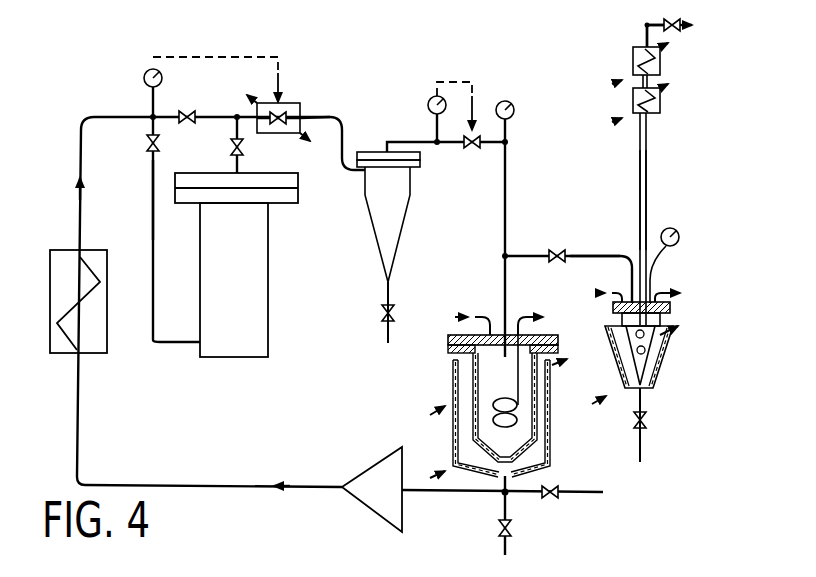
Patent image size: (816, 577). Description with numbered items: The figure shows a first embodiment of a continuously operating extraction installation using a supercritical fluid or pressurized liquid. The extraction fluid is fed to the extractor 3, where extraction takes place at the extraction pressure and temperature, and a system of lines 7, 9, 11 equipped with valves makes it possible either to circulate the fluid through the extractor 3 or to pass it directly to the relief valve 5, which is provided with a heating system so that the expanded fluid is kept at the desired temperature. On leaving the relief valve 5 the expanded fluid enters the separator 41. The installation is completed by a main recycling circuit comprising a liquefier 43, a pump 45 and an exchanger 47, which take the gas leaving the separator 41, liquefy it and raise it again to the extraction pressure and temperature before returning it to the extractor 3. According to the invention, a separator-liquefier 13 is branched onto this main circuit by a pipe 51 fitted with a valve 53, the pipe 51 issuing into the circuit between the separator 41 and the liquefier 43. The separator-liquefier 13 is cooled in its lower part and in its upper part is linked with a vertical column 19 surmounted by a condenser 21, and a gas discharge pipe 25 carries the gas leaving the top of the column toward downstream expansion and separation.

The extractor 3 is at (235, 347).
The relief valve 5 is at (300, 103).
The line 7 is at (345, 112).
The line 9 is at (153, 185).
The line 11 is at (237, 165).
The separator-liquefier 13 is at (663, 368).
The vertical column 19 is at (650, 178).
The condenser 21 is at (633, 95).
The gas discharge pipe 25 is at (640, 26).
The separator 41 is at (385, 233).
The liquefier 43 is at (430, 403).
The pump 45 is at (385, 508).
The exchanger 47 is at (100, 340).
The pipe 51 is at (598, 256).
The valve 53 is at (552, 252).